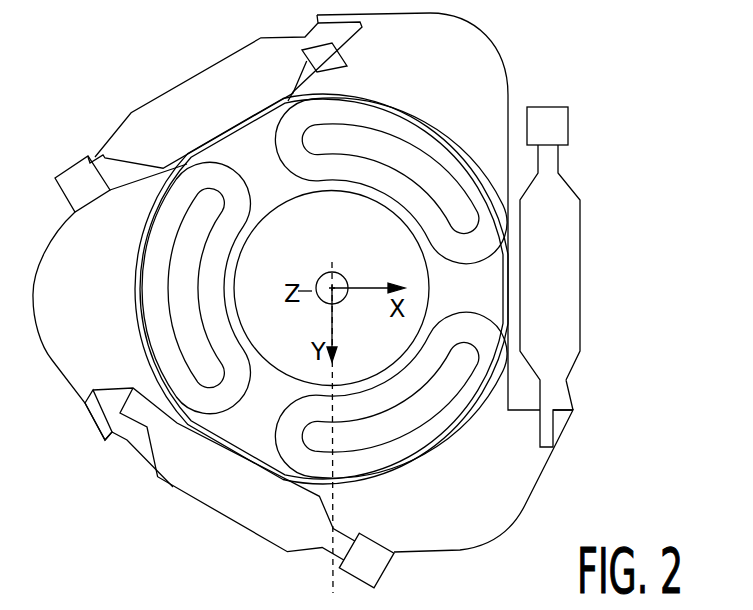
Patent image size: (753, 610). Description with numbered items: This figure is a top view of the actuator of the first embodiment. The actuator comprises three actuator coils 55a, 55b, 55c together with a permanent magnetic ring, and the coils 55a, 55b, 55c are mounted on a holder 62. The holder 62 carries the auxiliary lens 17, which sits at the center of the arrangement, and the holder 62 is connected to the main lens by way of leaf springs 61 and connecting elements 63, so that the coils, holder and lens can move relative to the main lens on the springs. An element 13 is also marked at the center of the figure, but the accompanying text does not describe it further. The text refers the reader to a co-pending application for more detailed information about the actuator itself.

The optical axis / center 13 is at (332, 262).
The auxiliary lens 17 is at (426, 278).
The actuator coil 55a is at (152, 325).
The actuator coil 55b is at (403, 120).
The actuator coil 55c is at (432, 445).
The leaf spring 61 is at (187, 100).
The holder 62 is at (502, 515).
The connecting element 63 is at (73, 177).